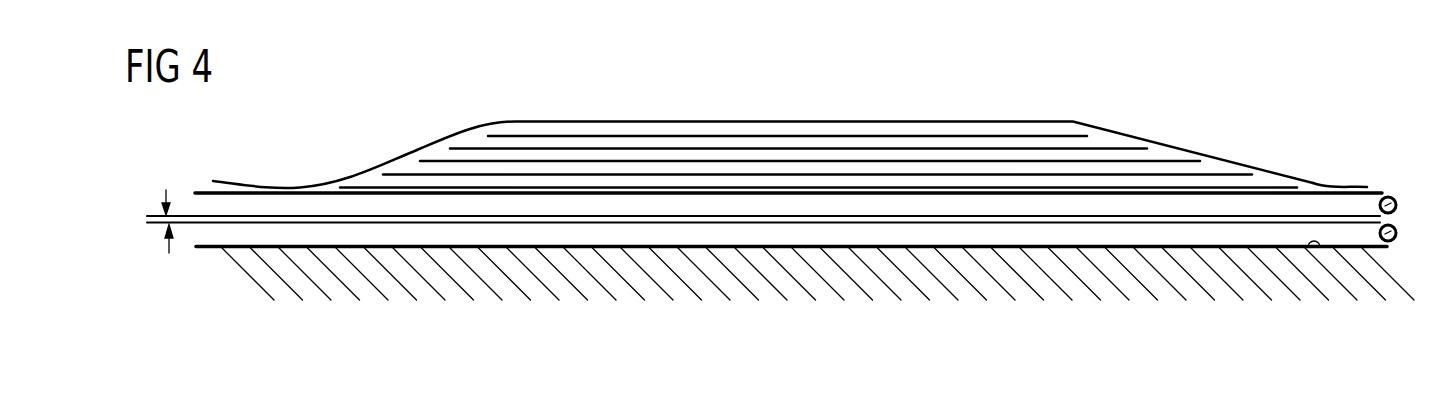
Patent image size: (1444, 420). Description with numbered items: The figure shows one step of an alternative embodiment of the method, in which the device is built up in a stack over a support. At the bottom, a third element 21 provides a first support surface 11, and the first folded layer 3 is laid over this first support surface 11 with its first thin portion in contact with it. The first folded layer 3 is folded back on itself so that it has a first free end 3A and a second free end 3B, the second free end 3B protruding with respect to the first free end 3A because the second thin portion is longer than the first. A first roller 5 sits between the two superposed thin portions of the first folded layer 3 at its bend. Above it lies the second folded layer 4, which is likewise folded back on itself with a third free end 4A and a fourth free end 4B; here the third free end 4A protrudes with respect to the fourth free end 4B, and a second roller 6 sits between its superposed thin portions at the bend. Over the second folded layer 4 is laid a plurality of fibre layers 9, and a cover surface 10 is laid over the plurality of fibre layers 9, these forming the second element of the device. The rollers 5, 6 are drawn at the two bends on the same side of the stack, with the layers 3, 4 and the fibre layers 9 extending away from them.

The first folded layer 3 is at (168, 253).
The first free end 3A is at (200, 250).
The second free end 3B is at (145, 225).
The second folded layer 4 is at (165, 190).
The third free end 4A is at (145, 215).
The fourth free end 4B is at (195, 189).
The first roller 5 is at (1398, 233).
The second roller 6 is at (1398, 205).
The plurality of fibre layers 9 is at (1270, 187).
The cover surface 10 is at (1313, 183).
The first support surface 11 is at (1323, 247).
The third element 21 is at (1260, 267).